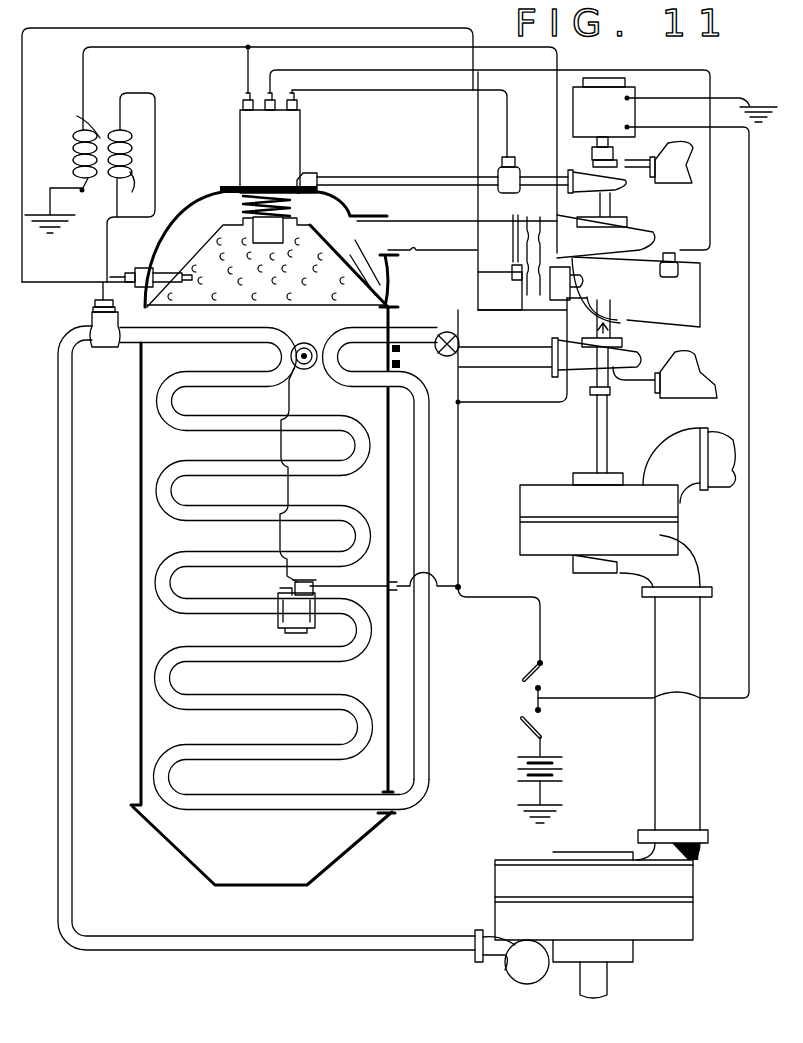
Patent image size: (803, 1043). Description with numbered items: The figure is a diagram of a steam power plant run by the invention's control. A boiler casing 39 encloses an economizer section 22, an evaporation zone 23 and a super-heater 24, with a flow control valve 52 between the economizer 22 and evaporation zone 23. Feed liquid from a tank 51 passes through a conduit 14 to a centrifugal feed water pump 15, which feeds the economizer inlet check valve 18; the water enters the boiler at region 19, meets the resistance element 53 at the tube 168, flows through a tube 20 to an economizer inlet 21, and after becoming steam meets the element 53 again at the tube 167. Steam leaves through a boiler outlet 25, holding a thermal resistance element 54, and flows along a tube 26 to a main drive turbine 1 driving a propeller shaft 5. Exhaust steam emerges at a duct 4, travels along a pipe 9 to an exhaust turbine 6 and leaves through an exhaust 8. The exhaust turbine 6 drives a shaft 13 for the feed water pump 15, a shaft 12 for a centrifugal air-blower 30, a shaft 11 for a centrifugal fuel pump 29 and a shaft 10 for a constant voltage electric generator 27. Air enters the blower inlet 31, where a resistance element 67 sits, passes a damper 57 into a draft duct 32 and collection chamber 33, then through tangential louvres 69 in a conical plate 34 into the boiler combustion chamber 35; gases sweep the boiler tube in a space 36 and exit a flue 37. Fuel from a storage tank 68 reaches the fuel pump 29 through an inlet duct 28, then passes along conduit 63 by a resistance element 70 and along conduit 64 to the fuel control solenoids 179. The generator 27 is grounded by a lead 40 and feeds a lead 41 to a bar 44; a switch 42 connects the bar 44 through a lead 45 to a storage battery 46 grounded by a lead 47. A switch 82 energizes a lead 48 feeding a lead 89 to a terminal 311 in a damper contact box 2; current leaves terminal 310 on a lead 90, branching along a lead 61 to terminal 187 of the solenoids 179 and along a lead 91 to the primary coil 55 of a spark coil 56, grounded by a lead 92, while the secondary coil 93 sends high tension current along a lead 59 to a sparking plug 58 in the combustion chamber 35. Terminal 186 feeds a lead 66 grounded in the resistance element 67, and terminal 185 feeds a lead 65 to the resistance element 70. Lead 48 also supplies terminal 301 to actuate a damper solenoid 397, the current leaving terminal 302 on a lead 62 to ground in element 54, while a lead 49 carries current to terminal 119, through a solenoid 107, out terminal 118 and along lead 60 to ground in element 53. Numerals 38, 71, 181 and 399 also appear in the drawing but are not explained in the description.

The main drive turbine 1 is at (690, 918).
The damper contact box 2 is at (564, 282).
The duct 4 is at (698, 858).
The propeller shaft 5 is at (606, 985).
The exhaust turbine 6 is at (520, 503).
The exhaust 8 is at (715, 483).
The pipe 9 is at (694, 662).
The shaft 10 is at (596, 154).
The shaft 11 is at (603, 205).
The shaft 12 is at (608, 328).
The shaft 13 is at (598, 438).
The conduit 14 is at (640, 382).
The centrifugal feed water pump 15 is at (628, 355).
The economizer inlet check valve 18 is at (443, 355).
The region 19 is at (407, 328).
The tube 20 is at (411, 386).
The economizer inlet 21 is at (428, 785).
The economizer section 22 is at (316, 663).
The evaporation zone 23 is at (238, 571).
The super-heater 24 is at (320, 425).
The boiler outlet 25 is at (124, 347).
The tube 26 is at (58, 843).
The constant voltage electric generator 27 is at (632, 118).
The inlet duct 28 is at (639, 160).
The centrifugal fuel pump 29 is at (613, 188).
The centrifugal air-blower 30 is at (650, 236).
The inlet 31 is at (694, 304).
The draft duct 32 is at (446, 232).
The collection chamber 33 is at (228, 262).
The conical plate 34 is at (348, 225).
The boiler combustion chamber 35 is at (266, 315).
The space 36 is at (265, 556).
The flue 37 is at (264, 846).
The spring 38 is at (243, 206).
The boiler casing 39 is at (141, 464).
The lead 40 is at (742, 98).
The lead 41 is at (635, 698).
The switch 42 is at (542, 722).
The bar 44 is at (535, 698).
The lead 45 is at (543, 746).
The storage battery 46 is at (556, 769).
The lead 47 is at (543, 797).
The lead 48 is at (458, 584).
The lead 49 is at (412, 598).
The tank 51 is at (690, 366).
The flow control valve 52 is at (297, 617).
The resistance element 53 is at (303, 369).
The thermal resistance element 54 is at (90, 322).
The primary coil 55 is at (73, 140).
The spark coil 56 is at (74, 119).
The damper 57 is at (533, 228).
The sparking plug 58 is at (151, 264).
The lead 59 is at (156, 130).
The lead 60 is at (292, 492).
The lead 61 is at (247, 70).
The lead 62 is at (478, 125).
The conduit 63 is at (522, 177).
The conduit 64 is at (394, 177).
The lead 65 is at (416, 90).
The lead 66 is at (656, 70).
The resistance element 67 is at (680, 262).
The storage tank 68 is at (668, 150).
The tangential louvres 69 is at (337, 255).
The resistance element 70 is at (500, 164).
The nozzle block 71 is at (285, 218).
The switch 82 is at (540, 672).
The lead 89 is at (526, 402).
The lead 90 is at (557, 114).
The lead 91 is at (145, 47).
The lead 92 is at (52, 205).
The secondary coil 93 is at (121, 194).
The solenoid 107 is at (310, 583).
The terminal 118 is at (310, 575).
The terminal 119 is at (320, 590).
The tube 167 is at (284, 354).
The tube 168 is at (326, 354).
The fuel control solenoids 179 is at (290, 142).
The connector 181 is at (314, 180).
The terminal 185 is at (298, 105).
The terminal 186 is at (274, 100).
The terminal 187 is at (243, 103).
The terminal 301 is at (478, 300).
The terminal 302 is at (485, 285).
The terminal 310 is at (583, 280).
The terminal 311 is at (602, 304).
The damper solenoid 397 is at (477, 283).
The block 399 is at (522, 280).